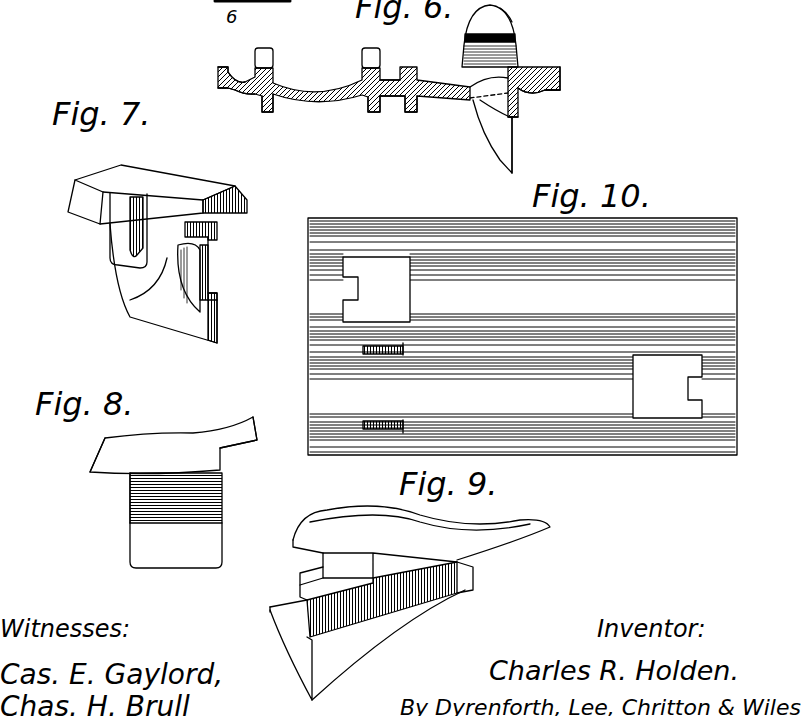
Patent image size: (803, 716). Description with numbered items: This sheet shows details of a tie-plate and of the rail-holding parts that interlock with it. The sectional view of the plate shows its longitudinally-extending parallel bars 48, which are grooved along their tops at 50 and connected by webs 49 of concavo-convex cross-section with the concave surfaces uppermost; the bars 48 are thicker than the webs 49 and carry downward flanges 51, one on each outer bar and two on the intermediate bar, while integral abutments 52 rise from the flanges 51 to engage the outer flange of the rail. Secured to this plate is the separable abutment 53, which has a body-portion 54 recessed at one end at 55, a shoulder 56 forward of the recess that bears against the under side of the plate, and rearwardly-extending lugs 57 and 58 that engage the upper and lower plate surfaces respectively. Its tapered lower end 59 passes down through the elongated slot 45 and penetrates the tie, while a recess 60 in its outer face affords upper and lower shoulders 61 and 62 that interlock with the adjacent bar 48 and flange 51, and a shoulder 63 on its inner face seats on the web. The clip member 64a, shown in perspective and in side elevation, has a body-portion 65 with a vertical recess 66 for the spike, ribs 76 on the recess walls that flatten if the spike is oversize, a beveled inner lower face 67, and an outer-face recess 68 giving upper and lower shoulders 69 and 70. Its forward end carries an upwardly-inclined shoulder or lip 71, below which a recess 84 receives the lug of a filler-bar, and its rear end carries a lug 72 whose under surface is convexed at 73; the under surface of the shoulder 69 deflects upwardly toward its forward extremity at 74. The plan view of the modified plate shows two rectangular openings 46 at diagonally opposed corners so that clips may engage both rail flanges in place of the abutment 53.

In FIG. 6, the elongated slot 45 is at (480, 104).
In FIG. 10, the opening 46 is at (522, 337).
In FIG. 6, the bar 48 is at (243, 93).
In FIG. 6, the web 49 is at (315, 88).
In FIG. 6, the groove 50 is at (245, 80).
In FIG. 6, the flange 51 is at (270, 113).
In FIG. 6, the integral abutment 52 is at (366, 48).
In FIG. 10, the integral abutment 52 is at (387, 354).
In FIG. 6, the separable abutment 53 is at (508, 20).
In FIG. 9, the separable abutment 53 is at (279, 620).
In FIG. 9, the body-portion 54 is at (348, 543).
In FIG. 9, the recess 55 is at (300, 574).
In FIG. 9, the shoulder 56 is at (290, 603).
In FIG. 9, the lug 57 is at (520, 522).
In FIG. 9, the lug 58 is at (470, 580).
In FIG. 6, the tapered lower end 59 is at (496, 158).
In FIG. 9, the tapered lower end 59 is at (290, 660).
In FIG. 6, the recess 60 is at (522, 66).
In FIG. 9, the recess 60 is at (423, 593).
In FIG. 6, the upper shoulder 61 is at (498, 66).
In FIG. 9, the upper shoulder 61 is at (440, 563).
In FIG. 6, the lower shoulder 62 is at (513, 121).
In FIG. 9, the lower shoulder 62 is at (370, 624).
In FIG. 6, the shoulder 63 is at (462, 87).
In FIG. 9, the shoulder 63 is at (300, 586).
In FIG. 7, the companion member 64a is at (207, 263).
In FIG. 7, the body-portion 65 is at (130, 300).
In FIG. 7, the vertical recess 66 is at (127, 223).
In FIG. 7, the beveled face 67 is at (163, 283).
In FIG. 7, the recess 68 is at (213, 273).
In FIG. 8, the recess 68 is at (207, 507).
In FIG. 7, the upper shoulder 69 is at (217, 240).
In FIG. 8, the upper shoulder 69 is at (150, 477).
In FIG. 7, the lower shoulder 70 is at (217, 304).
In FIG. 8, the lower shoulder 70 is at (158, 522).
In FIG. 7, the upwardly-inclined shoulder 71 is at (233, 204).
In FIG. 8, the upwardly-inclined shoulder 71 is at (243, 425).
In FIG. 7, the lug 72 is at (80, 197).
In FIG. 8, the convexed under surface 73 is at (103, 477).
In FIG. 8, the upwardly deflected portion 74 is at (207, 470).
In FIG. 7, the rib 76 is at (142, 197).
In FIG. 7, the recess 84 is at (187, 268).